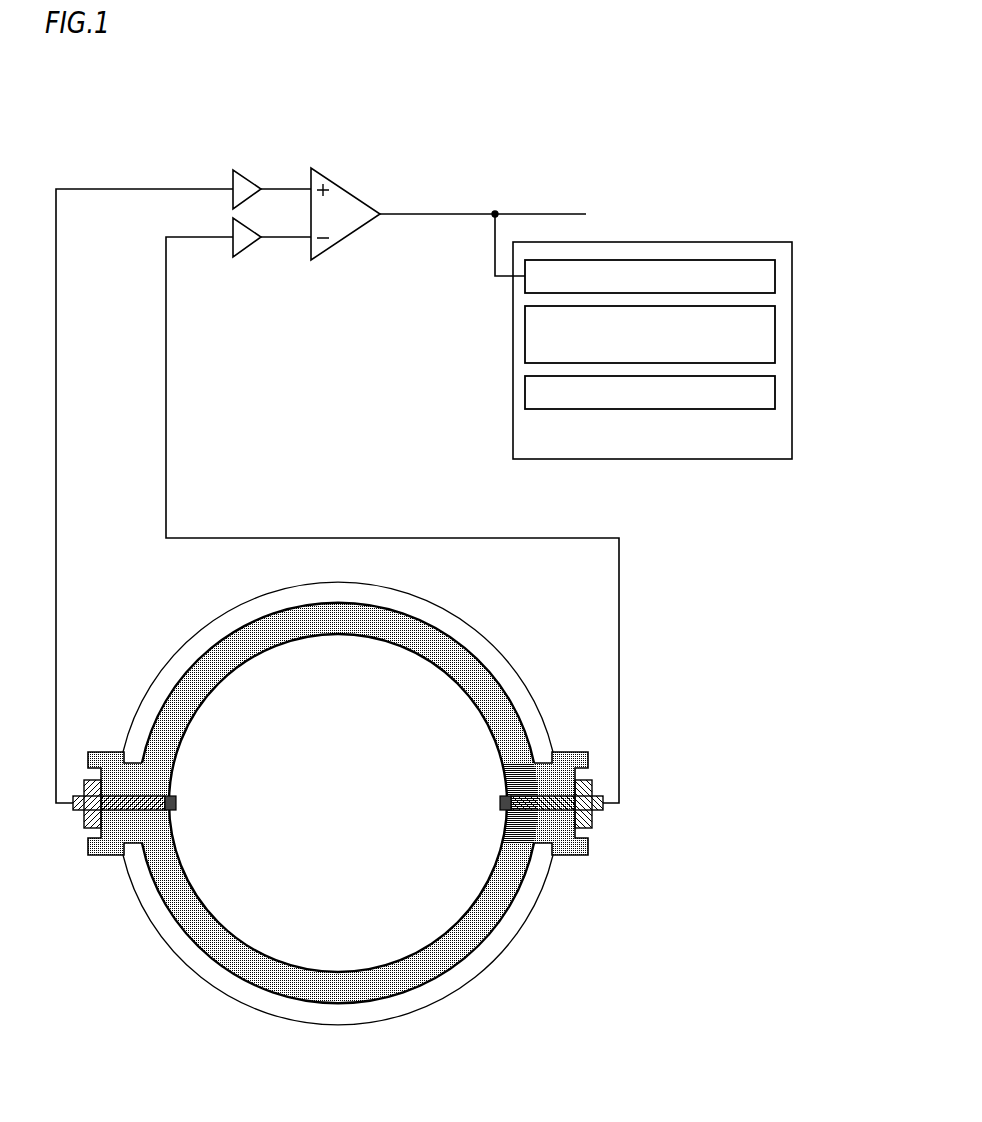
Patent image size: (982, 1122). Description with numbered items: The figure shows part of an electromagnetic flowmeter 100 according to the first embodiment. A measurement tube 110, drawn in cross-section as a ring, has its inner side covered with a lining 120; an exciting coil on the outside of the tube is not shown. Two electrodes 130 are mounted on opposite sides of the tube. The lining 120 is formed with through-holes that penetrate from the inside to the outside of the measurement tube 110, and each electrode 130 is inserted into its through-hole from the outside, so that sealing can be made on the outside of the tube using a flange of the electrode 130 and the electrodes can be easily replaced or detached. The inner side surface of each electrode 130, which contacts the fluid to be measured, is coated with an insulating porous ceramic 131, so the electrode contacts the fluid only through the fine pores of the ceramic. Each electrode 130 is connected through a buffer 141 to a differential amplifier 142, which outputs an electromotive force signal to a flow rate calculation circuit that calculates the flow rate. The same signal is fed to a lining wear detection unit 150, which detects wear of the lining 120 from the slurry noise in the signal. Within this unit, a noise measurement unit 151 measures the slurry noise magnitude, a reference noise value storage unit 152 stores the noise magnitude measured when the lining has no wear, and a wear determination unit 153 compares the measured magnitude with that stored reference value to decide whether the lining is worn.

The electromagnetic flowmeter 100 is at (103, 160).
The measurement tube 110 is at (336, 1026).
The lining 120 is at (352, 981).
The electrode 130 is at (113, 796).
The porous ceramic 131 is at (178, 801).
The buffer 141 is at (248, 177).
The differential amplifier 142 is at (345, 242).
The lining wear detection unit 150 is at (678, 376).
The noise measurement unit 151 is at (777, 272).
The reference noise value storage unit 152 is at (777, 341).
The wear determination unit 153 is at (777, 386).